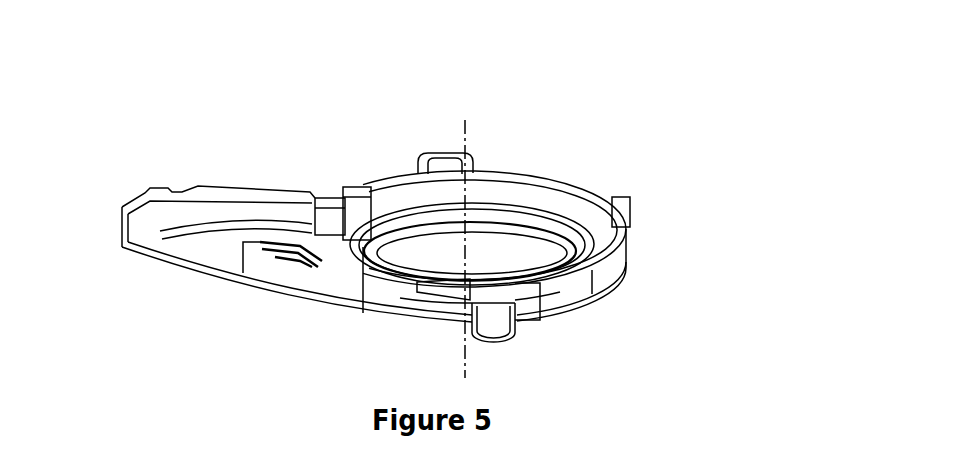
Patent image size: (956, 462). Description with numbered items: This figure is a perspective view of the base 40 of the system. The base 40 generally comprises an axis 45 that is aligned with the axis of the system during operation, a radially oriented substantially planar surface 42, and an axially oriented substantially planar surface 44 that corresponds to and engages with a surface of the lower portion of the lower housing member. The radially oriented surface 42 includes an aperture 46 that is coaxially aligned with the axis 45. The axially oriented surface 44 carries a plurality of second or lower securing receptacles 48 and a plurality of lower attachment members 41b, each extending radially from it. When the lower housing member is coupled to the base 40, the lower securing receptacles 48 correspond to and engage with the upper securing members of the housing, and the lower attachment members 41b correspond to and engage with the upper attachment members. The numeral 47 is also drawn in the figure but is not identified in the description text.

The base 40 is at (647, 268).
The lower attachment member 41b is at (262, 275).
The radially oriented substantially planar surface 42 is at (223, 248).
The axially oriented substantially planar surface 44 is at (328, 274).
The axis 45 is at (466, 141).
The aperture 46 is at (524, 244).
The floor edge 47 is at (186, 240).
The lower securing receptacle 48 is at (439, 142).